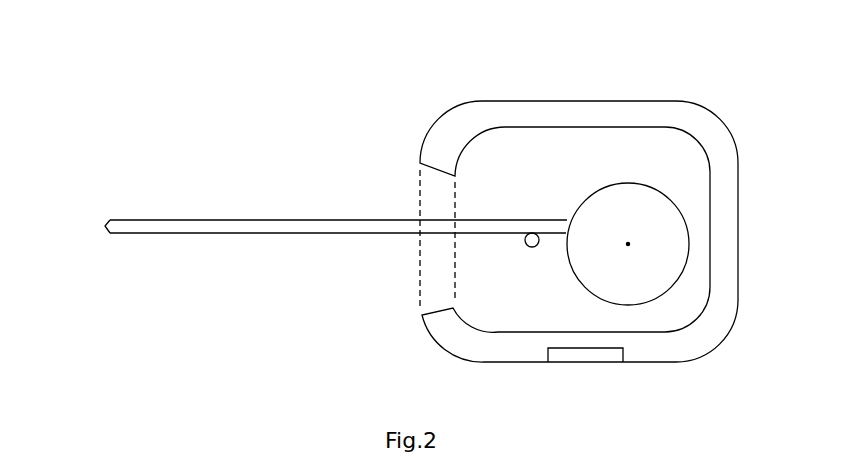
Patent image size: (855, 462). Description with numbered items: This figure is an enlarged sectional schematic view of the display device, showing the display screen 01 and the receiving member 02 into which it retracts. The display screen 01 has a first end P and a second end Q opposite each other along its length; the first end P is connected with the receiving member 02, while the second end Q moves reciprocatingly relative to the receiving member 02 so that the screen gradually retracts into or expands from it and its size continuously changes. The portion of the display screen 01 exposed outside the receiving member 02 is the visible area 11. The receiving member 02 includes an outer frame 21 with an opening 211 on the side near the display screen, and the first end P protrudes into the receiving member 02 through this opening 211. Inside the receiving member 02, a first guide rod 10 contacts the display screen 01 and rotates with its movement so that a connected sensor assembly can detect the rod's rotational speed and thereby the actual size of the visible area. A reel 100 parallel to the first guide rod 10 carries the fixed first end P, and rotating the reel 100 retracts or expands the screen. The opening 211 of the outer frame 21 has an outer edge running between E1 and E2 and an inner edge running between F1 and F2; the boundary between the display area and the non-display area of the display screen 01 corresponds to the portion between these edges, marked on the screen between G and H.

The display screen 01 is at (172, 170).
The receiving member 02 is at (585, 101).
The outer frame 21 is at (579, 231).
The visible area 11 is at (315, 220).
The opening 211 is at (408, 250).
The first guide rod 10 is at (537, 247).
The reel 100 is at (690, 250).
The second end Q is at (24, 209).
The outer edge point E1 is at (401, 158).
The inner edge point F1 is at (470, 182).
The mark on display screen G is at (406, 212).
The point H is at (461, 212).
The inner edge point F2 is at (467, 299).
The outer edge point E2 is at (401, 316).
The first end P is at (693, 199).